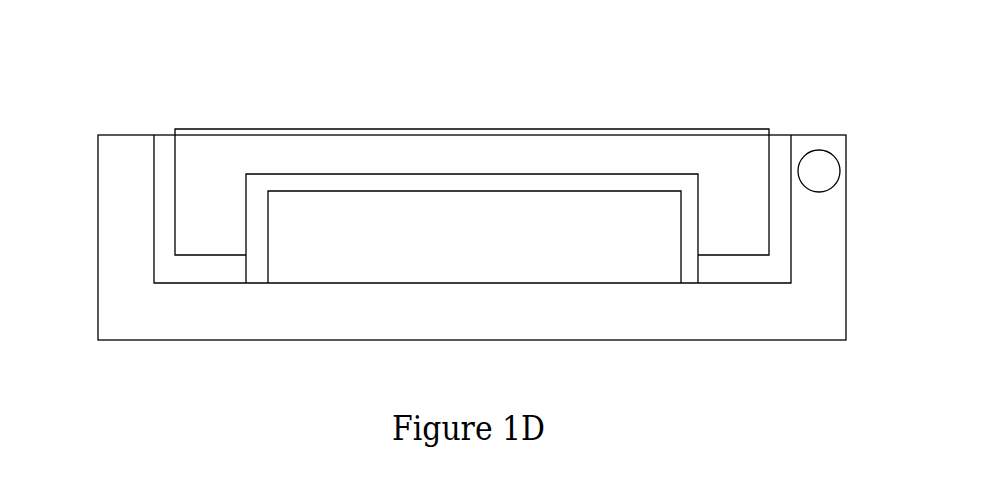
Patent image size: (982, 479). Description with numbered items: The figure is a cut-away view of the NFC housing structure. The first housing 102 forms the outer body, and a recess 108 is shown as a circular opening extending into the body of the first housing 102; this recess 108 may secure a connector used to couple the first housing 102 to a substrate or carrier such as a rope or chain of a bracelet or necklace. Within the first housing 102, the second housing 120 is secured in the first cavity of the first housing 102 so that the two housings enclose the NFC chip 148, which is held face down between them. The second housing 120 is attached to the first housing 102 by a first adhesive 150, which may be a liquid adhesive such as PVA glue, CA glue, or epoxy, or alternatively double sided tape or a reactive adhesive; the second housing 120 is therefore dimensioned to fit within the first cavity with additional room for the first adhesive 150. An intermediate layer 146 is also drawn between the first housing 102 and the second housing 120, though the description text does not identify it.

The first housing 102 is at (126, 191).
The outer layer 146 is at (168, 162).
The second housing 120 is at (695, 129).
The first adhesive 150 is at (435, 183).
The NFC chip 148 is at (493, 246).
The recess 108 is at (840, 171).